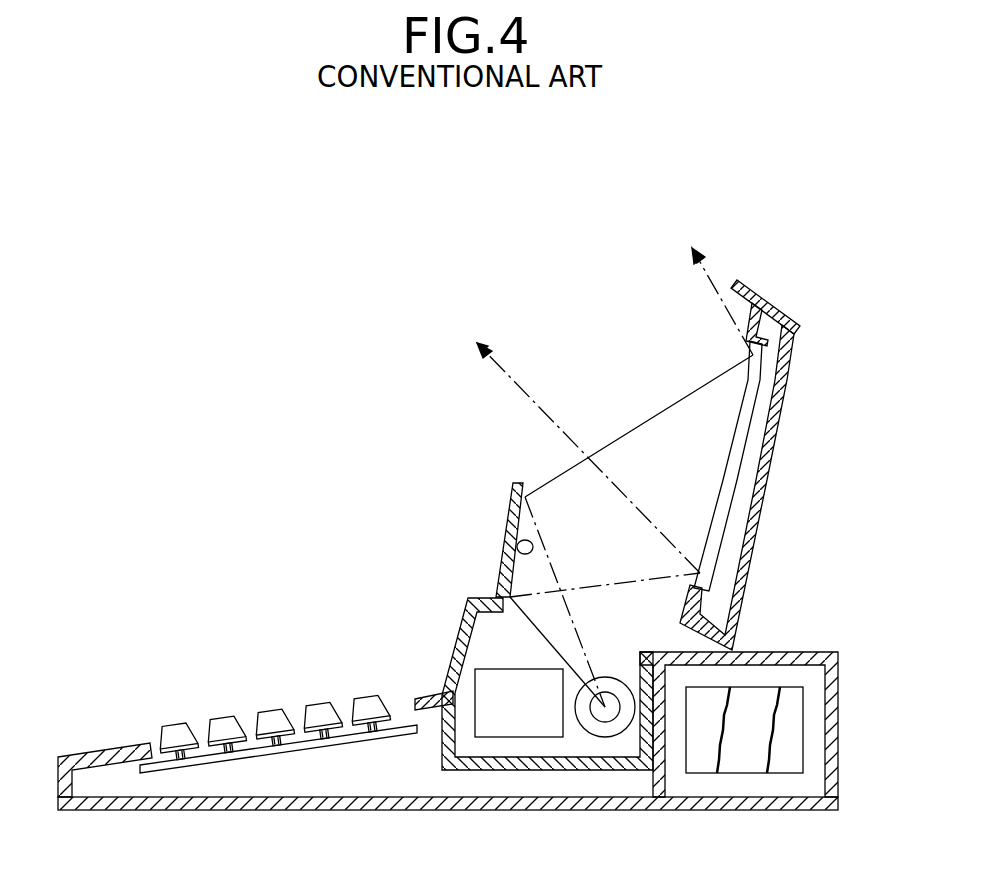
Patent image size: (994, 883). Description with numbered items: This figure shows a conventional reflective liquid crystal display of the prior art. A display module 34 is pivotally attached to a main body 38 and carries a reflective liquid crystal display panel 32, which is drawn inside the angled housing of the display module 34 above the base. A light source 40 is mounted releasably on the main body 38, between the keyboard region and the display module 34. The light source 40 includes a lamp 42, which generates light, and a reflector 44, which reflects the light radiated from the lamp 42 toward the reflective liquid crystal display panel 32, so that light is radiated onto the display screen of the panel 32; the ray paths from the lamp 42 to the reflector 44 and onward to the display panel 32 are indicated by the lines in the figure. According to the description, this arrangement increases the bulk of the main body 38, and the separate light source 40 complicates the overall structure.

The reflective liquid crystal display panel 32 is at (750, 393).
The display module 34 is at (758, 513).
The main body 38 is at (833, 701).
The light source 40 is at (453, 642).
The lamp 42 is at (605, 710).
The reflector 44 is at (518, 547).